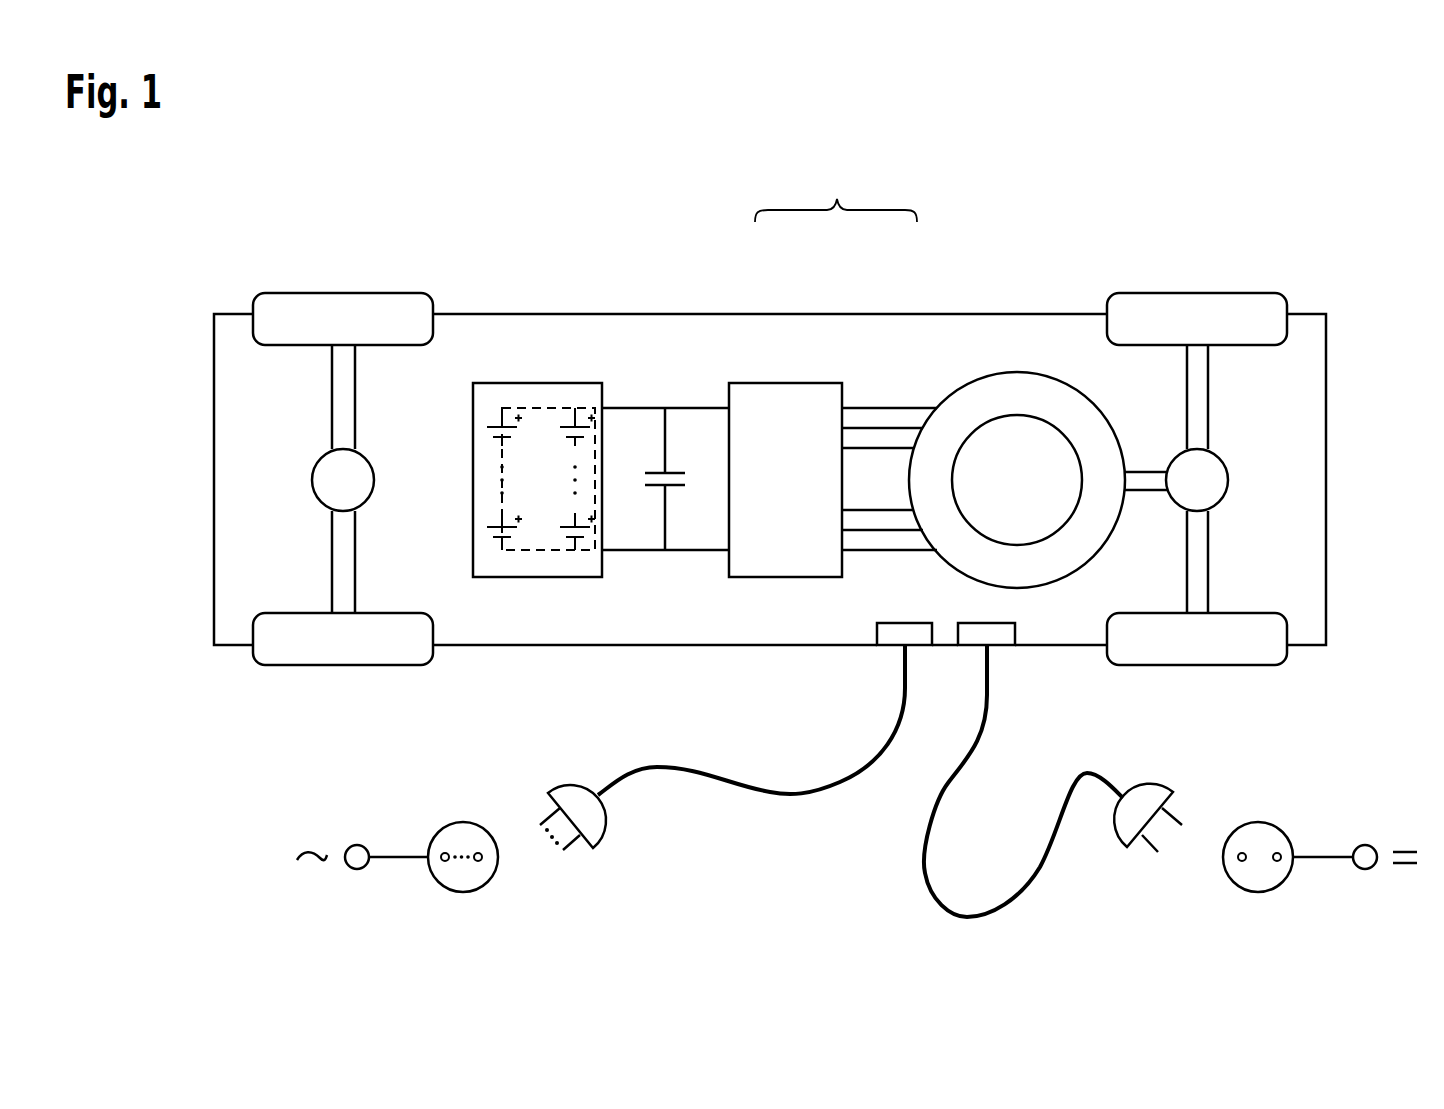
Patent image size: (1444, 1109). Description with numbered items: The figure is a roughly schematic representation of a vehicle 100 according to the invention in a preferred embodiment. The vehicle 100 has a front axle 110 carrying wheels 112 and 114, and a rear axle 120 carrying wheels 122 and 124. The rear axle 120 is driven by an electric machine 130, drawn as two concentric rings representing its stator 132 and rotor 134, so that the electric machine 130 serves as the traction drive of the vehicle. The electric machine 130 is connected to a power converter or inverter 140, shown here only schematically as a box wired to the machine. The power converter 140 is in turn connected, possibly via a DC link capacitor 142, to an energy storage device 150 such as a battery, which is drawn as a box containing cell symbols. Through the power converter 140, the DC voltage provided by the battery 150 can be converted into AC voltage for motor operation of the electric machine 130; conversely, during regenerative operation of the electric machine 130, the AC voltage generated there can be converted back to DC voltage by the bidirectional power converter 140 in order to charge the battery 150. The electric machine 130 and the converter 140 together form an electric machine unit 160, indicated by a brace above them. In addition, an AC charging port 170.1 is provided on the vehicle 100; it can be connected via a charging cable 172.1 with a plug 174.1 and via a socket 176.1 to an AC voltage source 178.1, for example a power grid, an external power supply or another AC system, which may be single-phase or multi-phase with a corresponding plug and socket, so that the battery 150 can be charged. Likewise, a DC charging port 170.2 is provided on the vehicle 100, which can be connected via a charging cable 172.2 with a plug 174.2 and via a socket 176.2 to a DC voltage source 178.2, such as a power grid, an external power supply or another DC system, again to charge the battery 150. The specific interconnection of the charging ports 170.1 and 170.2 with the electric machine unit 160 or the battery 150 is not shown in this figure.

The vehicle 100 is at (1337, 223).
The front axle 110 is at (348, 255).
The wheel 112 is at (300, 293).
The wheel 114 is at (300, 667).
The rear axle 120 is at (1202, 255).
The wheel 122 is at (1153, 293).
The wheel 124 is at (1150, 667).
The electric machine 130 is at (997, 407).
The stator 132 is at (1000, 392).
The rotor 134 is at (1047, 452).
The power converter 140 is at (787, 382).
The DC link capacitor 142 is at (647, 473).
The energy storage device 150 is at (535, 382).
The electric machine unit 160 is at (837, 199).
The AC charging port 170.1 is at (877, 635).
The DC charging port 170.2 is at (1015, 635).
The charging cable 172.1 is at (788, 797).
The charging cable 172.2 is at (1075, 795).
The plug 174.1 is at (607, 837).
The plug 174.2 is at (1170, 787).
The socket 176.1 is at (463, 892).
The socket 176.2 is at (1258, 893).
The AC voltage source 178.1 is at (357, 870).
The DC voltage source 178.2 is at (1365, 870).